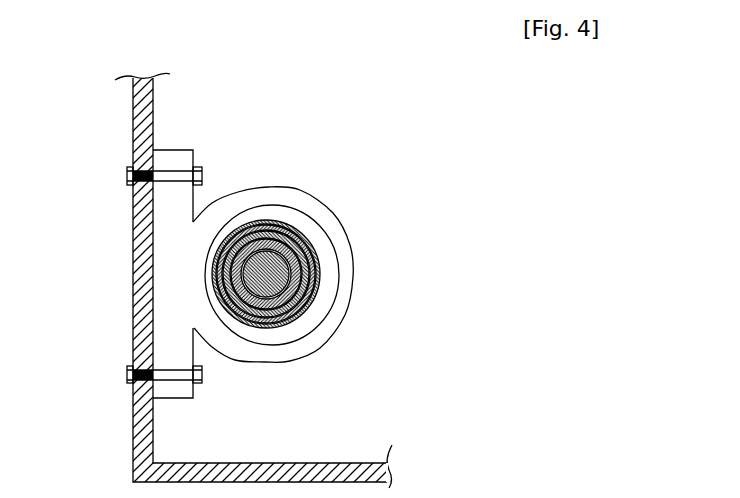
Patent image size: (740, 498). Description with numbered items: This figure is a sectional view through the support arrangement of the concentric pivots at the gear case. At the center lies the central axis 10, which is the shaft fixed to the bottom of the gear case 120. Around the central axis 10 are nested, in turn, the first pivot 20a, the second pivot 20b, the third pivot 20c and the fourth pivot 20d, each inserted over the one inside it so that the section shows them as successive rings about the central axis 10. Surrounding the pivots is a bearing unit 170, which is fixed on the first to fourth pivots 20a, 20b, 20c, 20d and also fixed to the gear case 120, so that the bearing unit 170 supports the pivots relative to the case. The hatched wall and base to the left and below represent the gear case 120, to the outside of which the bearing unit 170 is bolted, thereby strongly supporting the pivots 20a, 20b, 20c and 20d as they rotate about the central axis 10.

The gear case 120 is at (143, 114).
The bearing unit 170 is at (268, 194).
The fourth pivot 20d is at (305, 237).
The third pivot 20c is at (311, 255).
The second pivot 20b is at (309, 288).
The first pivot 20a is at (296, 296).
The central axis 10 is at (287, 292).